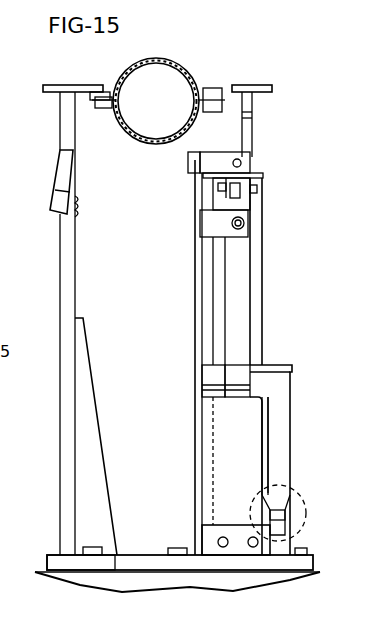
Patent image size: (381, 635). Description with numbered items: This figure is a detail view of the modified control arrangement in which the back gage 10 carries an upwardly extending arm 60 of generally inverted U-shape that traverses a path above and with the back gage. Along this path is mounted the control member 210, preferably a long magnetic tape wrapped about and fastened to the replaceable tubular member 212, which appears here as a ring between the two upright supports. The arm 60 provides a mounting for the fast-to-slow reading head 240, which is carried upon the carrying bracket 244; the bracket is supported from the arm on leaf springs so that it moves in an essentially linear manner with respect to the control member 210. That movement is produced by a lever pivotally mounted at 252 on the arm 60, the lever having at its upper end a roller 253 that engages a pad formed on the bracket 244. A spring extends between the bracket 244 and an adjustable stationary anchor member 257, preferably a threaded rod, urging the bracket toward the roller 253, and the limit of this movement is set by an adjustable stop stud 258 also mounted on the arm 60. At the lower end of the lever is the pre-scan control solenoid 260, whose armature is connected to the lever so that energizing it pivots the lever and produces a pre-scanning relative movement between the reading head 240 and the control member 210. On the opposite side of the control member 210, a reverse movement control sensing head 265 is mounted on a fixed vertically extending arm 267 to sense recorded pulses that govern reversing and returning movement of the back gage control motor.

The back gage 10 is at (163, 580).
The arm 60 is at (260, 288).
The control member 210 is at (130, 142).
The tubular member 212 is at (129, 116).
The fast-to-slow reading head 240 is at (208, 95).
The carrying bracket 244 is at (262, 182).
The pivot 252 is at (293, 378).
The roller 253 is at (232, 190).
The adjustable stationary anchor member 257 is at (241, 163).
The adjustable stop stud 258 is at (244, 225).
The pre-scan control solenoid 260 is at (293, 503).
The reverse movement control sensing head 265 is at (111, 86).
The fixed vertically extending arm 267 is at (61, 290).